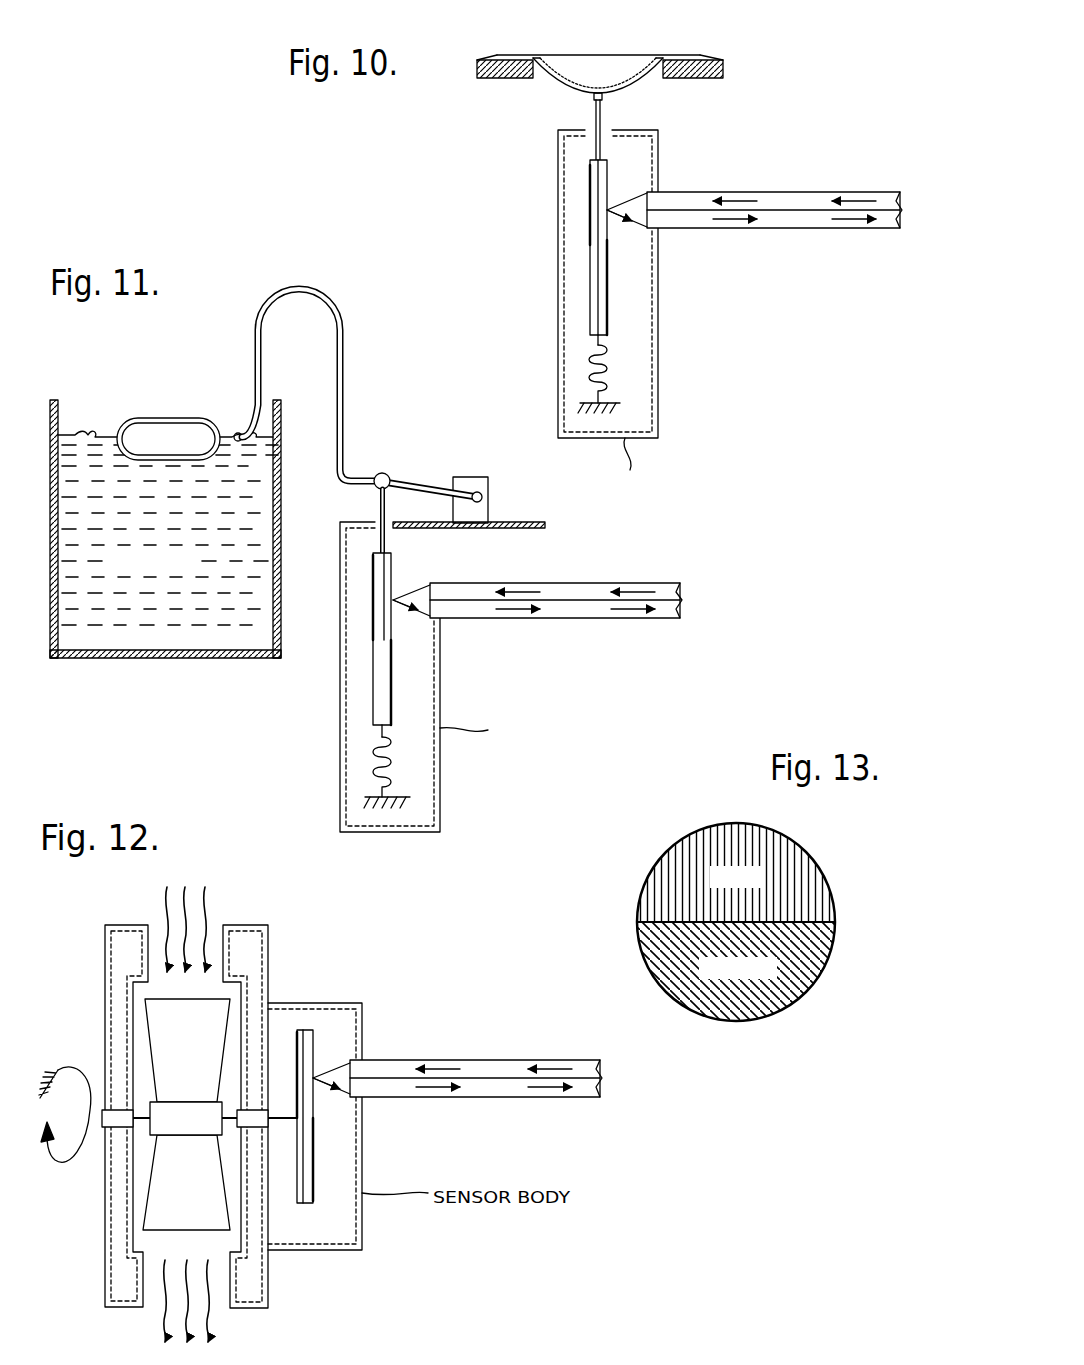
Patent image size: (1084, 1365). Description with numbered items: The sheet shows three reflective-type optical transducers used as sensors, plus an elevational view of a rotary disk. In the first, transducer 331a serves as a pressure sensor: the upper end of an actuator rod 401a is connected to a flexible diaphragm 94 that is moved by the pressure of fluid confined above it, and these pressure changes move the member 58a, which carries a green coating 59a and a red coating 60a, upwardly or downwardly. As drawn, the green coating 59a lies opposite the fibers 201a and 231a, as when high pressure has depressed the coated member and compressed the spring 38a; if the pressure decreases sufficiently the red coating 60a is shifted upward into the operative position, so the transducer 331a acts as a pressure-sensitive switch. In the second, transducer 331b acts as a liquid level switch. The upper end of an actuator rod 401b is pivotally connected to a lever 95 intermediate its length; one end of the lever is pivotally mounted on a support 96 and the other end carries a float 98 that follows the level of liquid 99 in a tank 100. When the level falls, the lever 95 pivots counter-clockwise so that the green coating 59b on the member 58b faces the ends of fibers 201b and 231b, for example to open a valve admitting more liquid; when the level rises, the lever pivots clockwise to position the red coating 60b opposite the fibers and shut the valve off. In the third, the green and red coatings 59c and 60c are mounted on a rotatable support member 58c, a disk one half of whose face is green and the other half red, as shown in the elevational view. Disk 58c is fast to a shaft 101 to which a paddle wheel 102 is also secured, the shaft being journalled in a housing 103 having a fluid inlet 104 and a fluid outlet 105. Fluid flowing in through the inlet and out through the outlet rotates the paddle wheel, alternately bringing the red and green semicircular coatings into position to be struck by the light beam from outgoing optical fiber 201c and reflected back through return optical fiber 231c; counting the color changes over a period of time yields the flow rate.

In FIG. 10, the flexible diaphragm 94 is at (598, 58).
In FIG. 10, the actuator rod 401a is at (596, 115).
In FIG. 10, the green coating 59a is at (607, 175).
In FIG. 10, the outgoing fiber 201a is at (754, 199).
In FIG. 10, the return fiber 231a is at (773, 230).
In FIG. 10, the member 58a is at (590, 240).
In FIG. 10, the reflective-type optical transducer 331a is at (660, 290).
In FIG. 10, the red coating 60a is at (607, 318).
In FIG. 10, the spring 38a is at (612, 378).
In FIG. 11, the tank 100 is at (45, 412).
In FIG. 11, the liquid 99 is at (80, 435).
In FIG. 11, the float 98 is at (118, 418).
In FIG. 11, the lever 95 is at (352, 473).
In FIG. 11, the support 96 is at (477, 477).
In FIG. 11, the actuator rod 401b is at (380, 499).
In FIG. 11, the green coating 59b is at (391, 572).
In FIG. 11, the outgoing fiber 201b is at (557, 590).
In FIG. 11, the return fiber 231b is at (562, 623).
In FIG. 11, the red coating 60b is at (393, 672).
In FIG. 11, the member 58b is at (373, 703).
In FIG. 11, the reflective-type optical transducer 331b is at (442, 783).
In FIG. 12, the housing 103 is at (105, 963).
In FIG. 12, the fluid inlet 104 is at (157, 925).
In FIG. 12, the fluid outlet 105 is at (222, 1305).
In FIG. 12, the paddle wheel 102 is at (217, 1008).
In FIG. 12, the shaft 101 is at (283, 1100).
In FIG. 12, the rotatable support member 58c is at (285, 1180).
In FIG. 13, the rotatable support member 58c is at (781, 1013).
In FIG. 12, the red coating 60c is at (313, 1040).
In FIG. 13, the red coating 60c is at (810, 879).
In FIG. 12, the green coating 59c is at (313, 1148).
In FIG. 13, the green coating 59c is at (812, 950).
In FIG. 12, the outgoing optical fiber 201c is at (478, 1068).
In FIG. 12, the return optical fiber 231c is at (481, 1102).